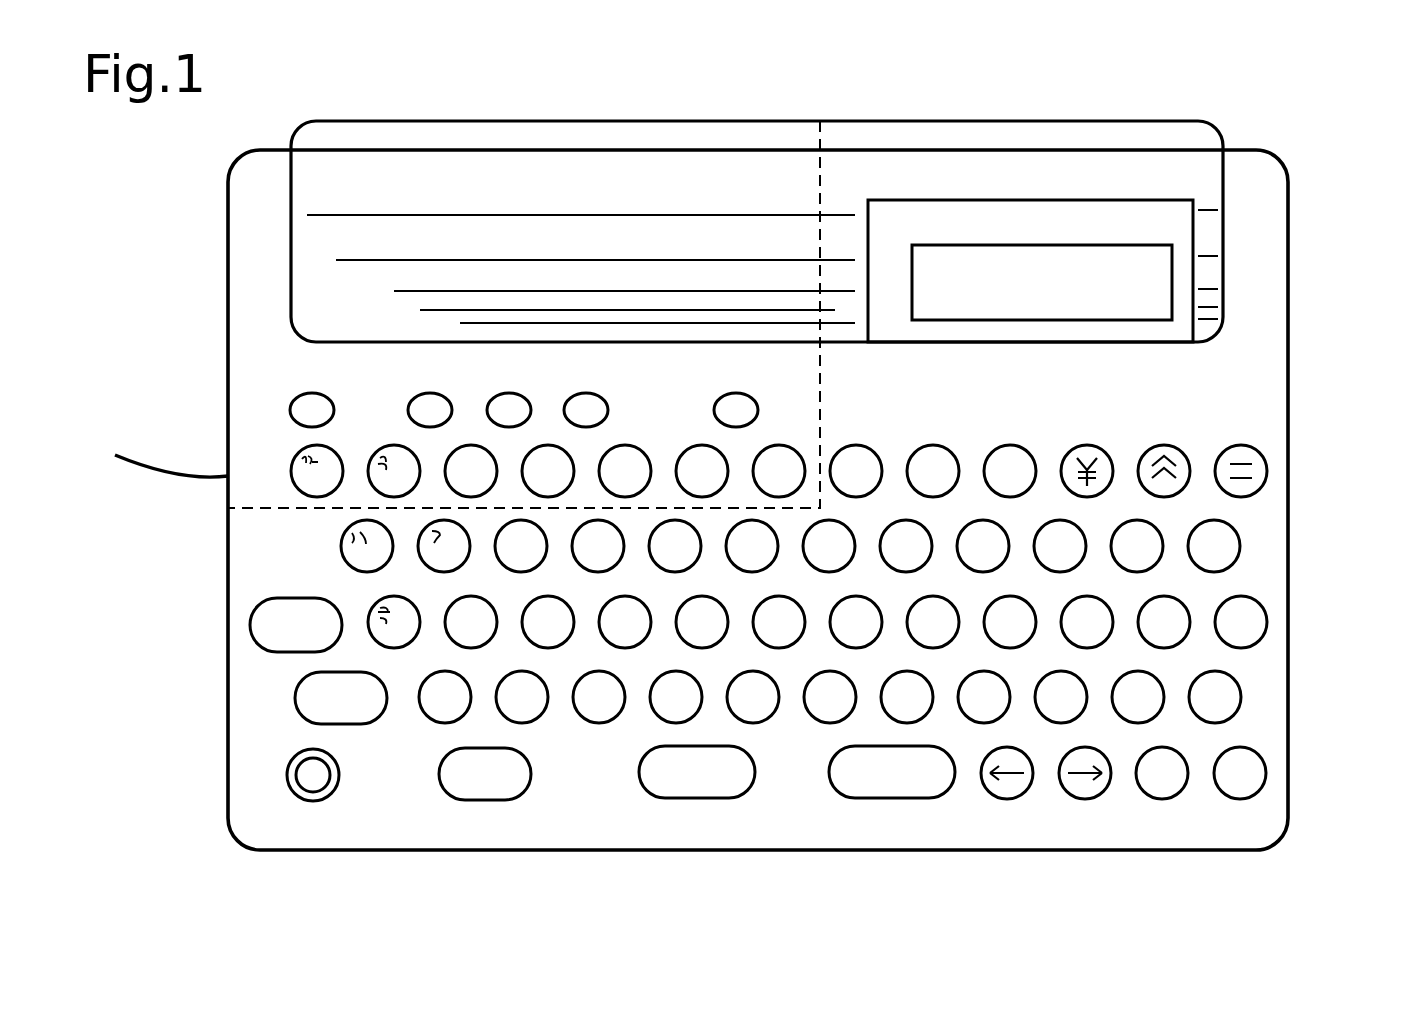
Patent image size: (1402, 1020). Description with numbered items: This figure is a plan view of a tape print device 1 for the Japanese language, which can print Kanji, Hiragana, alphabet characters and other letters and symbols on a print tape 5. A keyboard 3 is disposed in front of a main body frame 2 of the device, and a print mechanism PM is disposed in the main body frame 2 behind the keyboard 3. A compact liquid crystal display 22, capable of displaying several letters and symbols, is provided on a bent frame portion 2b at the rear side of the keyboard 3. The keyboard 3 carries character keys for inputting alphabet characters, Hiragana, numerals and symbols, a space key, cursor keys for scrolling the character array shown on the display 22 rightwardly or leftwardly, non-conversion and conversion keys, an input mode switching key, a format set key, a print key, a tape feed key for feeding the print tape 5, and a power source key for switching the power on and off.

The tape print device 1 is at (1288, 128).
The main body frame 2 is at (1289, 376).
The bent frame portion 2b is at (302, 204).
The keyboard 3 is at (566, 800).
The print tape 5 is at (152, 472).
The liquid crystal display 22 is at (1067, 245).
The print mechanism PM is at (795, 158).